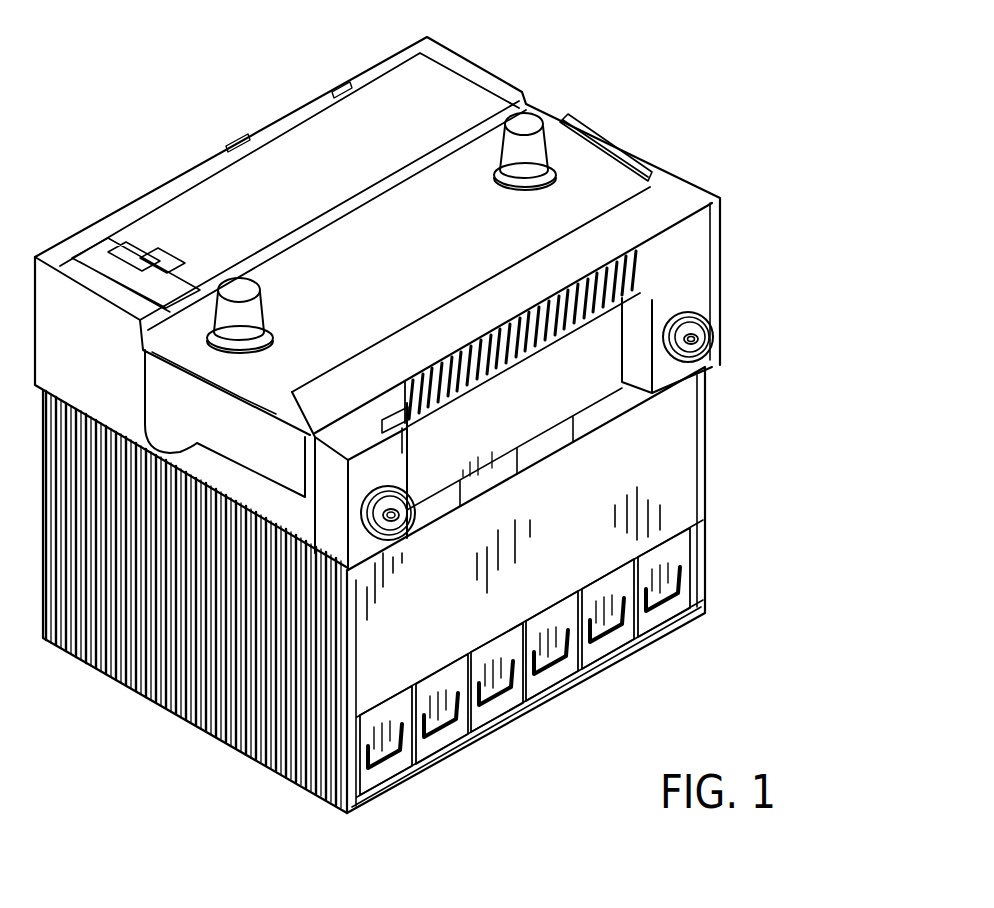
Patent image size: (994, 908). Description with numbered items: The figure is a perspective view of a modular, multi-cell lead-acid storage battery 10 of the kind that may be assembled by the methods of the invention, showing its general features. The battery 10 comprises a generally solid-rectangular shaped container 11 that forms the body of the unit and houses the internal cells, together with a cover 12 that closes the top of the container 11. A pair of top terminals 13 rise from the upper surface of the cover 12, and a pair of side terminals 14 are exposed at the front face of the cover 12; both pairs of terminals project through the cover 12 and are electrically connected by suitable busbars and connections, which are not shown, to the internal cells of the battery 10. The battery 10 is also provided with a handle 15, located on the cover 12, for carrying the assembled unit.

The battery 10 is at (790, 156).
The container 11 is at (682, 450).
The cover 12 is at (702, 290).
The top terminals 13 is at (262, 297).
The side terminals 14 is at (391, 521).
The handle 15 is at (682, 193).